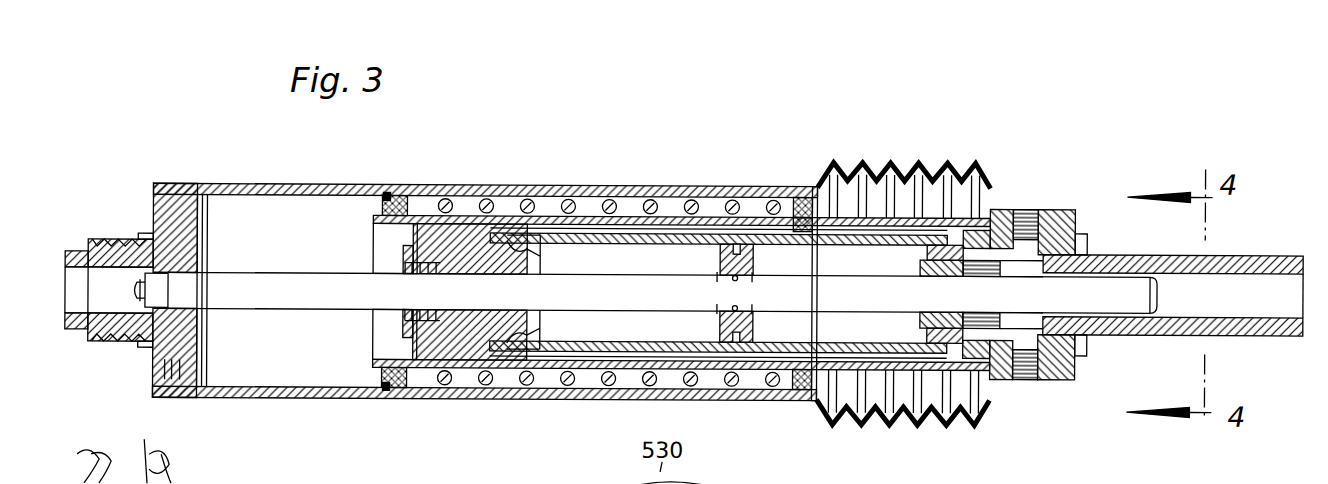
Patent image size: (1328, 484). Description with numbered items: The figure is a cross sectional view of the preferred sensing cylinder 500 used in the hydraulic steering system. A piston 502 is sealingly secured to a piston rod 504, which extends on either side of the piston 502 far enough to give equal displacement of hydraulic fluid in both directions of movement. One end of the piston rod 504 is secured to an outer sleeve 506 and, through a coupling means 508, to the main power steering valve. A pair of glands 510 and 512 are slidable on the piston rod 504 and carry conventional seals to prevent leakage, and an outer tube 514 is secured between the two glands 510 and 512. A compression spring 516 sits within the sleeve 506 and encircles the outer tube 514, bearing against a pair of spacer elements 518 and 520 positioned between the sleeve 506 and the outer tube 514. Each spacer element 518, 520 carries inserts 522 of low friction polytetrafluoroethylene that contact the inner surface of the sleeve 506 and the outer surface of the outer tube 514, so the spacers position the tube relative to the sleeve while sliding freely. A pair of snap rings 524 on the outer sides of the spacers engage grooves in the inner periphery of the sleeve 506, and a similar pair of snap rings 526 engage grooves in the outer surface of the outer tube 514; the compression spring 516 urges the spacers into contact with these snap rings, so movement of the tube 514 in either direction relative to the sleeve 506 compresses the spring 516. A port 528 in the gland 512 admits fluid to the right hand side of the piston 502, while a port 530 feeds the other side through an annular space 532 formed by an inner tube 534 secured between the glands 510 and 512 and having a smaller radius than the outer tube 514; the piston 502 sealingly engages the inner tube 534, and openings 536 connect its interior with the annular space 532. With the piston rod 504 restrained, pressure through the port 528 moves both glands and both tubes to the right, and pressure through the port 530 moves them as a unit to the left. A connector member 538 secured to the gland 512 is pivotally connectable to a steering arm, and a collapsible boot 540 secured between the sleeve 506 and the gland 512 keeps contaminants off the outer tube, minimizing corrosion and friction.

The sensing cylinder 500 is at (593, 148).
The piston 502 is at (754, 257).
The piston rod 504 is at (912, 264).
The outer sleeve 506 is at (280, 184).
The coupling means 508 is at (103, 241).
The gland 510 is at (470, 222).
The gland 512 is at (1005, 385).
The outer tube 514 is at (748, 184).
The compression spring 516 is at (503, 398).
The spacer element 518 is at (392, 192).
The spacer element 520 is at (787, 184).
The inserts 522 is at (413, 397).
The snap rings 524 is at (388, 190).
The snap rings 526 is at (372, 213).
The port 528 is at (1030, 380).
The port 530 is at (1027, 211).
The annular space 532 is at (662, 243).
The inner tube 534 is at (612, 243).
The openings 536 is at (545, 243).
The connector member 538 is at (1292, 232).
The collapsible boot 540 is at (982, 162).